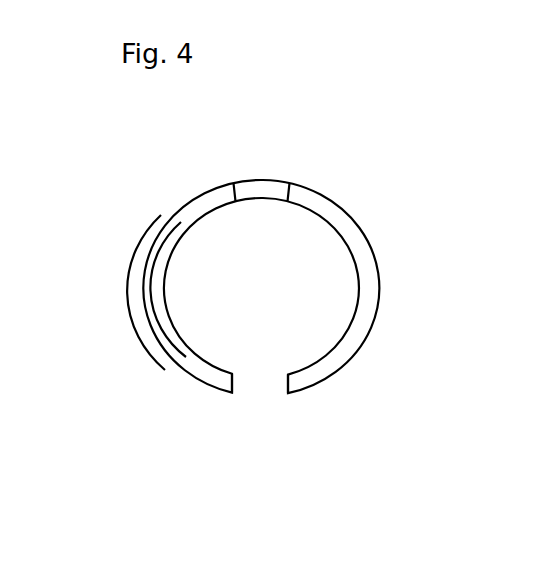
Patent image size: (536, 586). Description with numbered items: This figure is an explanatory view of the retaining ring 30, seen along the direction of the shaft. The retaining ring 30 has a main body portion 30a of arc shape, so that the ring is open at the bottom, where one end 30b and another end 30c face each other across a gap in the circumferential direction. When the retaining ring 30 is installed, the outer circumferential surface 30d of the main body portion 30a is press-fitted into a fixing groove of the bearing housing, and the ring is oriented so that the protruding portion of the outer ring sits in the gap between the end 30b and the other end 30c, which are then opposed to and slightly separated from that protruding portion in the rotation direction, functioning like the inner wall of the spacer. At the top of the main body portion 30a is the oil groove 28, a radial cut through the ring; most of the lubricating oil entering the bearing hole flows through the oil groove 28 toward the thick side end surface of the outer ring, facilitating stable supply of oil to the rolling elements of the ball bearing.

The oil groove 28 is at (287, 186).
The retaining ring 30 is at (196, 178).
The main body portion 30a is at (114, 265).
The outer circumferential surface 30d is at (148, 268).
The one end 30b is at (233, 382).
The other end 30c is at (287, 382).